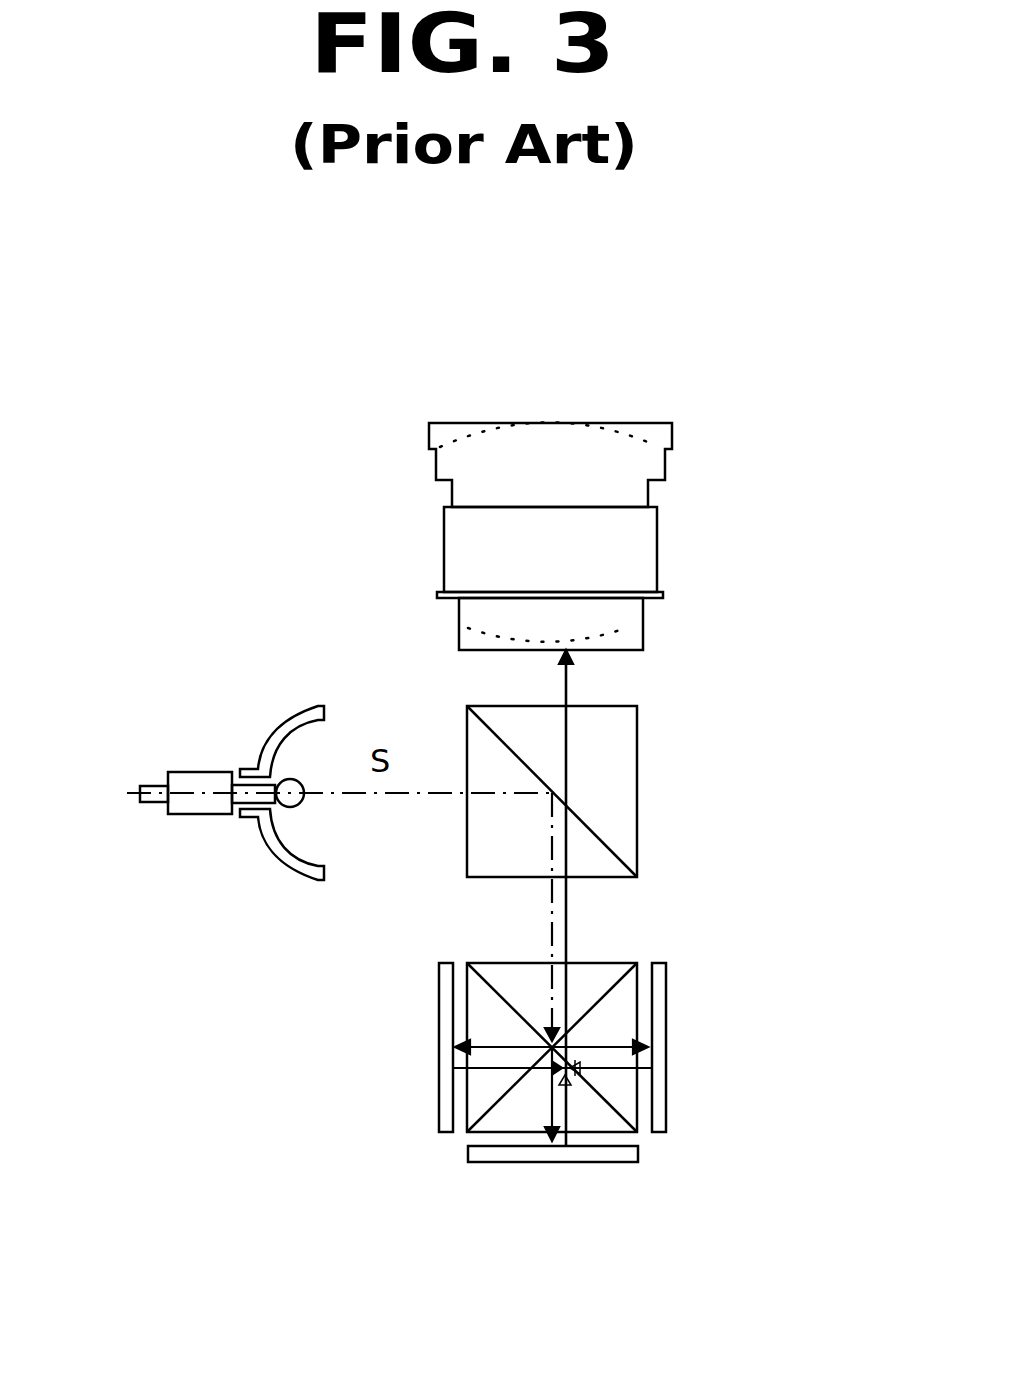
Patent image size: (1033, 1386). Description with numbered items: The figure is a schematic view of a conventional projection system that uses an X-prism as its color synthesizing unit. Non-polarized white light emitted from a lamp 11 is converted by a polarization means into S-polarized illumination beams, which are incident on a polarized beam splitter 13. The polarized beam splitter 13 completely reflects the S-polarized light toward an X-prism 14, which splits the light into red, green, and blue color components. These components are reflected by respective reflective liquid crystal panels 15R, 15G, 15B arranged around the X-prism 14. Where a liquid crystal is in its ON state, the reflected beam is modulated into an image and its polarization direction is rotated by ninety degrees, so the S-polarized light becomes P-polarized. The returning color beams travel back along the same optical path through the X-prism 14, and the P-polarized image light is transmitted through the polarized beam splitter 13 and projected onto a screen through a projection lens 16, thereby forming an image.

The lamp 11 is at (232, 755).
The polarized beam splitter 13 is at (599, 767).
The X-prism 14 is at (585, 979).
The reflective liquid crystal panel 15R is at (390, 1083).
The reflective liquid crystal panel 15G is at (523, 1217).
The reflective liquid crystal panel 15B is at (716, 1023).
The projection lens 16 is at (592, 536).